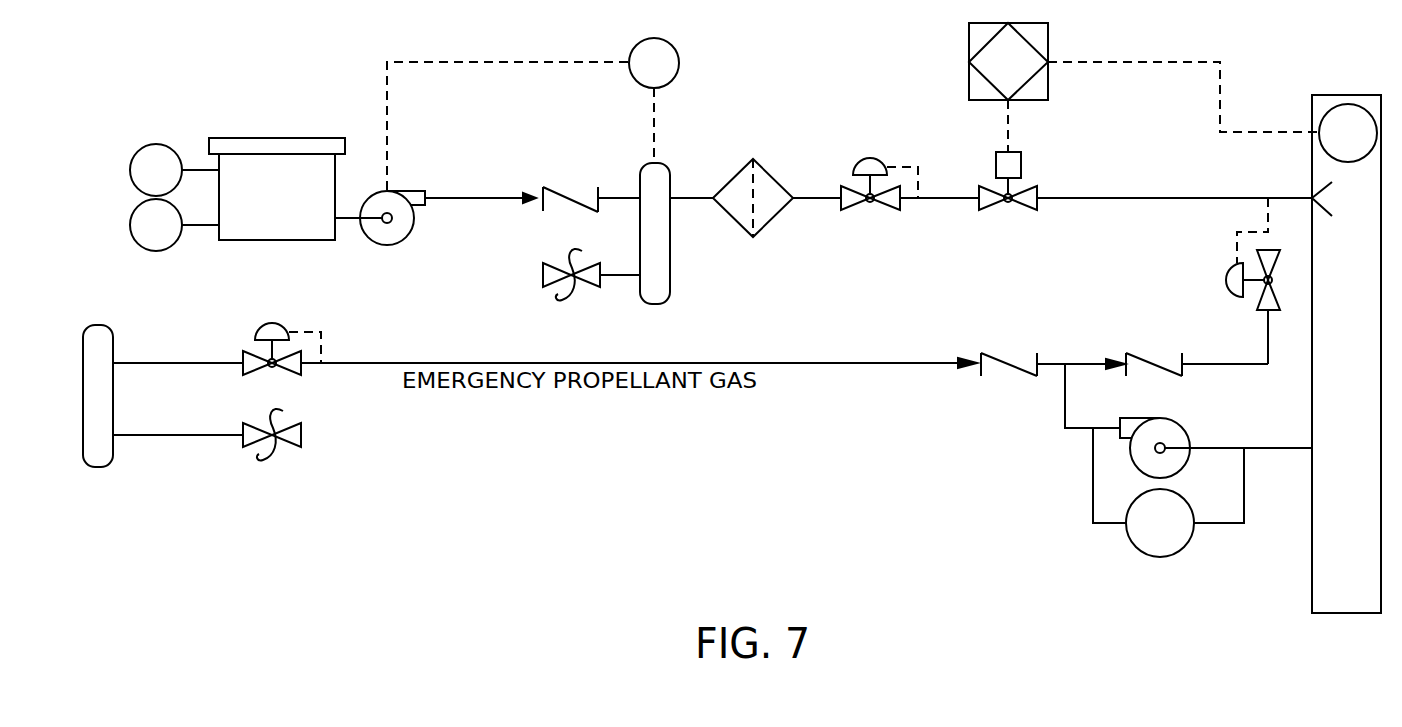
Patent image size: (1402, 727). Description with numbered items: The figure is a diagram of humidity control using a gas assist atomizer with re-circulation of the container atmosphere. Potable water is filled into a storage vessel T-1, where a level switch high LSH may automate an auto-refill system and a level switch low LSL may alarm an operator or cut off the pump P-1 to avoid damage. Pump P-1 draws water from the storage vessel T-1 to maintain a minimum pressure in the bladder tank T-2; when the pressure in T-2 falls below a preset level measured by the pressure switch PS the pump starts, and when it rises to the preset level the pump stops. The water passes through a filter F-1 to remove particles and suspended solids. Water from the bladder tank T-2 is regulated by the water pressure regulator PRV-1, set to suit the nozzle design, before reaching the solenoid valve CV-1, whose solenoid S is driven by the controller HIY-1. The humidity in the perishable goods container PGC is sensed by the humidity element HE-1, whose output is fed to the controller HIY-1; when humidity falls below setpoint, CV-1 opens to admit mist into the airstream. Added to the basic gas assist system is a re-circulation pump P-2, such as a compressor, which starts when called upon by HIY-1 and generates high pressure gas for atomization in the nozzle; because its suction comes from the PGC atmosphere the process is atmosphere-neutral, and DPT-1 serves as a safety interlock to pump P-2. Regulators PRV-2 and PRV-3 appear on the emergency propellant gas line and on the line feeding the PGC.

The level switch high LSH is at (174, 170).
The level switch low LSL is at (174, 225).
The storage vessel T-1 is at (277, 189).
The pump P-1 is at (435, 205).
The pressure switch PS is at (533, 114).
The bladder tank T-2 is at (656, 233).
The filter F-1 is at (777, 193).
The water pressure regulator PRV-1 is at (910, 199).
The solenoid S is at (1008, 165).
The solenoid valve CV-1 is at (1145, 209).
The controller HIY-1 is at (1144, 87).
The humidity element HE-1 is at (1348, 133).
The perishable goods container PGC is at (1346, 354).
The pressure regulating valve PRV-3 is at (1221, 281).
The pressure regulating valve PRV-2 is at (610, 363).
The re-circulation pump P-2 is at (1216, 448).
The differential pressure transmitter DPT-1 is at (1185, 502).